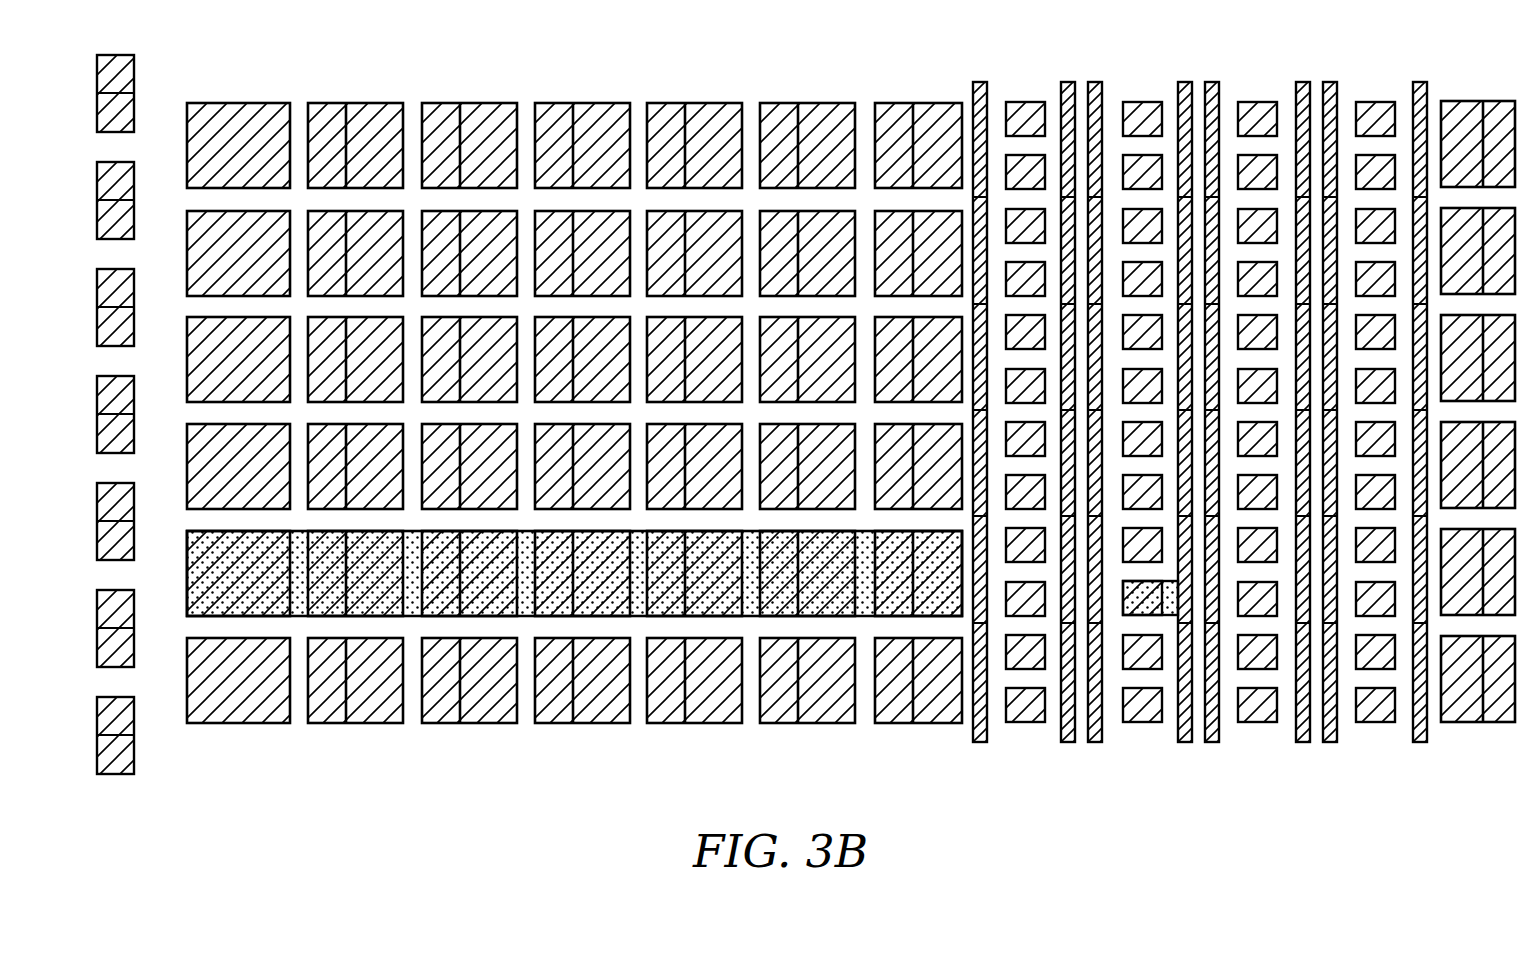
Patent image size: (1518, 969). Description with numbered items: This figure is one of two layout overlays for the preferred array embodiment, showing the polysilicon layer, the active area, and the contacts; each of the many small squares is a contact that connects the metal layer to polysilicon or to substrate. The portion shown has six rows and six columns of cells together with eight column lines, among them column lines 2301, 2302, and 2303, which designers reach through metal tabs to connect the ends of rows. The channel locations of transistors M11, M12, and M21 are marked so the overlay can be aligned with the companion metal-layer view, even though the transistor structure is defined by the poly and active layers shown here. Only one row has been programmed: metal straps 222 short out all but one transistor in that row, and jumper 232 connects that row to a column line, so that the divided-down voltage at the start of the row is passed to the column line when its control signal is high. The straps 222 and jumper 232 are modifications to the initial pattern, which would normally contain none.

The memory cell M11 is at (301, 147).
The memory cell M12 is at (415, 146).
The memory cell M21 is at (300, 257).
The selected row of memory cells 222 is at (184, 587).
The bit line 230_1 2301 is at (979, 80).
The bit line 230_2 2302 is at (1067, 80).
The bit line 230_3 2303 is at (1100, 80).
The selected contact / memory cell 232 is at (1167, 607).